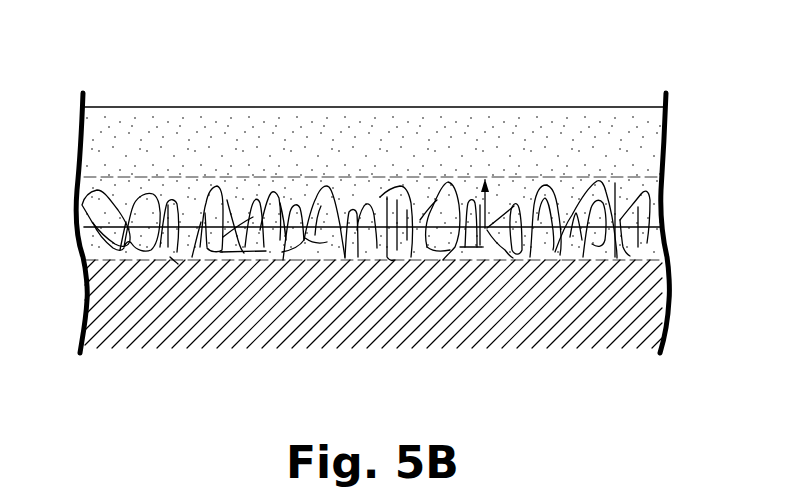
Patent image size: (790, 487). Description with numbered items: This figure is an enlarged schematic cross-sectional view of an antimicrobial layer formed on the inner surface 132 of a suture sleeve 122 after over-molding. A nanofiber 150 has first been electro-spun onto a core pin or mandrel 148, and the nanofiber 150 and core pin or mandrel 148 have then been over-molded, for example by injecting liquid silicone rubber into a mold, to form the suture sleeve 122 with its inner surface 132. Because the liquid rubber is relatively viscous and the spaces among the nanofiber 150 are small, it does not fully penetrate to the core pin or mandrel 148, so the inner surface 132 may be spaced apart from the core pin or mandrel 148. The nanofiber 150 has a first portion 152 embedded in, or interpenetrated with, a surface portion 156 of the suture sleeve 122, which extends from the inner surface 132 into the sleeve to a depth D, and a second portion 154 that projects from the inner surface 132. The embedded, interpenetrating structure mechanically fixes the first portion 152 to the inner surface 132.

The suture sleeve 122 is at (550, 98).
The inner surface 132 is at (394, 248).
The core pin or mandrel 148 is at (565, 349).
The nanofiber 150 is at (203, 192).
The first portion 152 is at (167, 200).
The second portion 154 is at (172, 242).
The surface portion 156 is at (380, 197).
The depth D is at (482, 222).